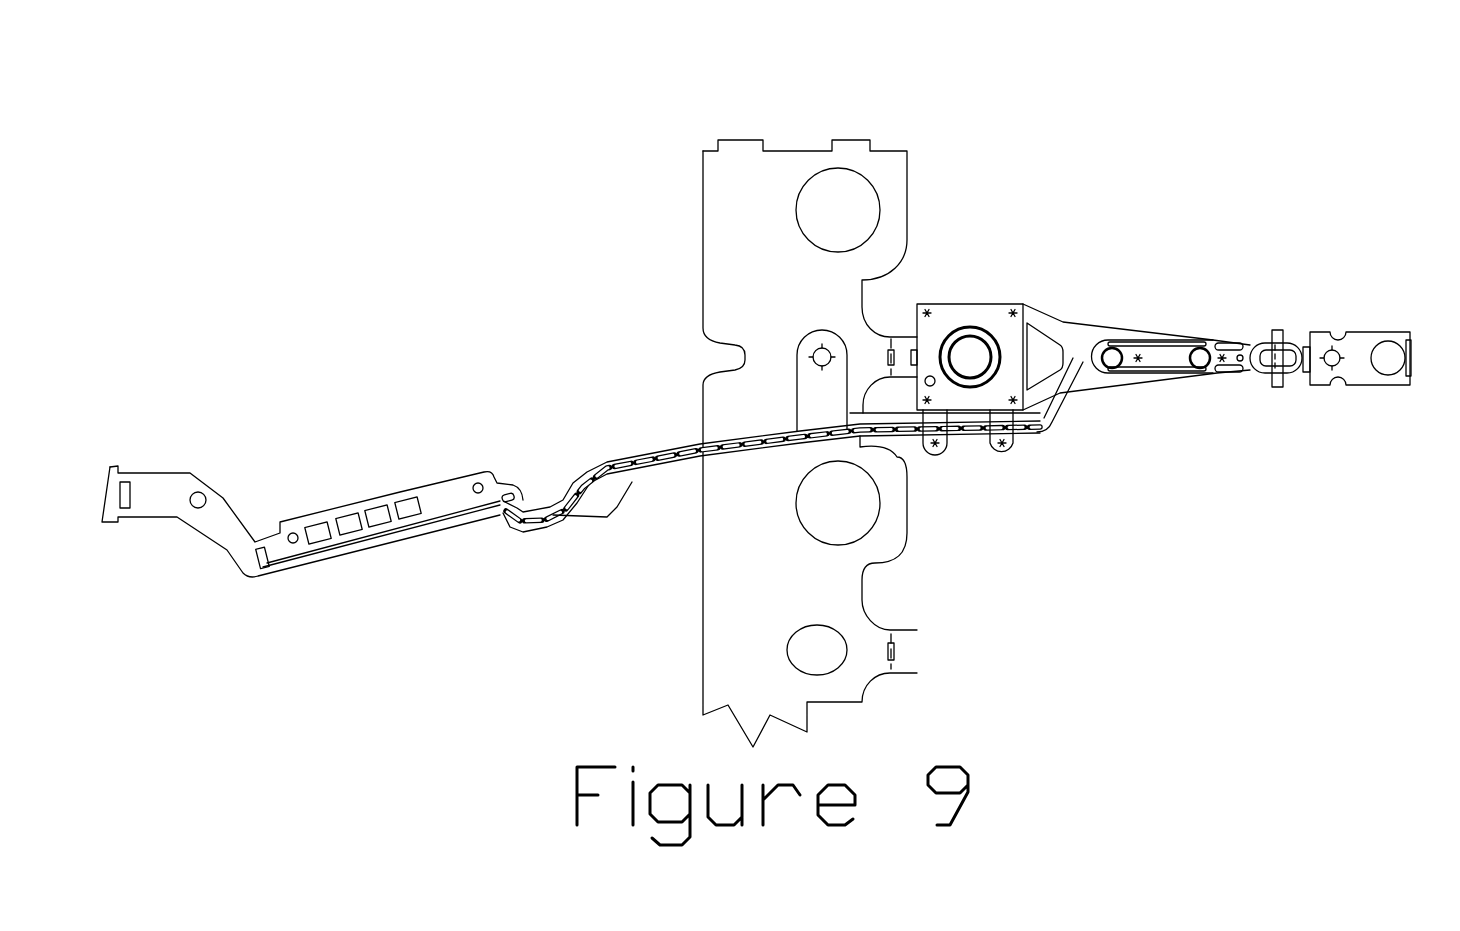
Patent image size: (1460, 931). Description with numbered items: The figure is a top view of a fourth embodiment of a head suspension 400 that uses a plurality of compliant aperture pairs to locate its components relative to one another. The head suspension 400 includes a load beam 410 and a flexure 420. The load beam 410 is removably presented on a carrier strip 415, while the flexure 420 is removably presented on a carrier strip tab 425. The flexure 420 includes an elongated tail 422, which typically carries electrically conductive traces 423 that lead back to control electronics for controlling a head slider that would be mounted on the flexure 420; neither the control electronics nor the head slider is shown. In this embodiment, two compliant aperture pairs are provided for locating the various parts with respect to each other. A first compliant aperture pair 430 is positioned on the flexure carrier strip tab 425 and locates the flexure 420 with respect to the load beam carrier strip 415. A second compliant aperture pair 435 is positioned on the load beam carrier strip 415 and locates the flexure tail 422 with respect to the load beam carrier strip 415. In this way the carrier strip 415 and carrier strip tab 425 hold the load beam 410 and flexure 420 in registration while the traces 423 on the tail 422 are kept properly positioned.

The head suspension 400 is at (1173, 120).
The load beam 410 is at (1037, 313).
The carrier strip 415 is at (907, 192).
The flexure 420 is at (1102, 342).
The elongated tail 422 is at (605, 517).
The electrically conductive traces 423 is at (647, 467).
The carrier strip tab 425 is at (1362, 332).
The first compliant aperture pair 430 is at (1368, 550).
The second compliant aperture pair 435 is at (993, 528).